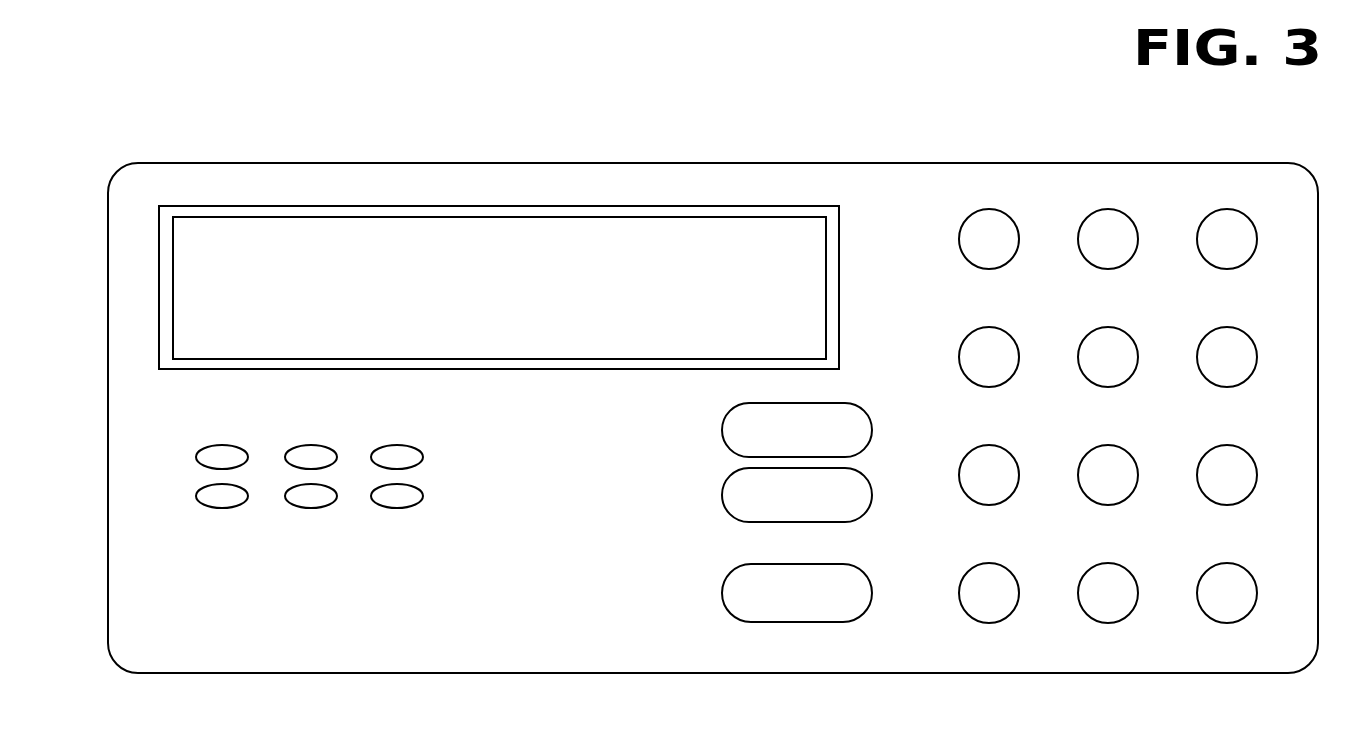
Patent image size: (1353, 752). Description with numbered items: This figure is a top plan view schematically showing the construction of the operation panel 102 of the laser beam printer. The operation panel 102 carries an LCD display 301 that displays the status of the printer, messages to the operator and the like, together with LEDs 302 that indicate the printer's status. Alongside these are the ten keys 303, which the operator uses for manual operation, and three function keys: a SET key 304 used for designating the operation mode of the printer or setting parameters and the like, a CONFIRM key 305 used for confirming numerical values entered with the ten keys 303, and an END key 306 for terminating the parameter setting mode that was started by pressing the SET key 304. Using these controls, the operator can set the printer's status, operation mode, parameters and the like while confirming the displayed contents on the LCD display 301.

The operation panel 102 is at (715, 166).
The LCD display 301 is at (263, 228).
The LEDs 302 is at (425, 468).
The ten keys 303 is at (1025, 203).
The SET key 304 is at (722, 430).
The CONFIRM key 305 is at (722, 496).
The END key 306 is at (722, 580).